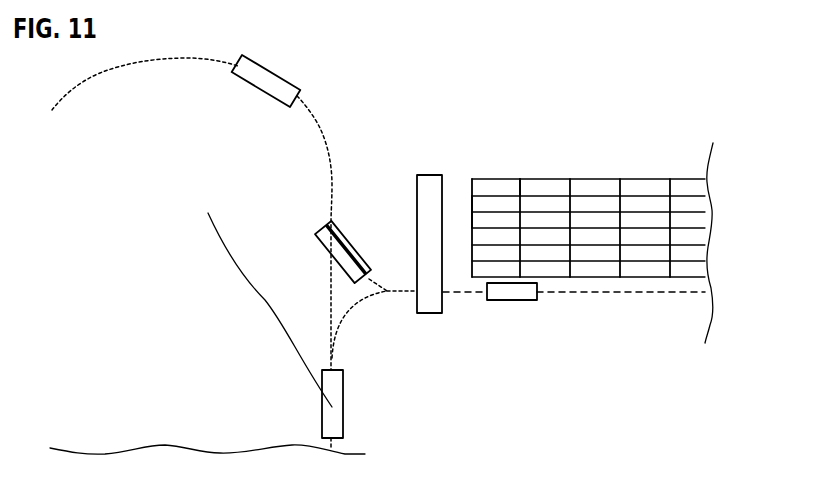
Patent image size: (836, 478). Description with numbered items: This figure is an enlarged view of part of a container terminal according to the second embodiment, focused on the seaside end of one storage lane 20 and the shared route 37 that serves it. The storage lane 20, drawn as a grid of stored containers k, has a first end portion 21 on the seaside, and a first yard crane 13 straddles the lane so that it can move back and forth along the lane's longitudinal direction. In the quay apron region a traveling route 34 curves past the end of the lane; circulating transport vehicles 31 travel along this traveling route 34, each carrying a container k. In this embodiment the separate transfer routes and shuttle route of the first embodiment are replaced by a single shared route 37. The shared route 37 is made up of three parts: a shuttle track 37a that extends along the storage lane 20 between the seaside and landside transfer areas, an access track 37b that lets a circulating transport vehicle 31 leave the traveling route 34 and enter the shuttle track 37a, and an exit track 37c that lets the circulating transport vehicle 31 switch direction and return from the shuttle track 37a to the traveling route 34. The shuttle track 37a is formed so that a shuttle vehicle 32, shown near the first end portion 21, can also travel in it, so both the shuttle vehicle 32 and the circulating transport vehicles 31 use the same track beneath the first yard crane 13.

The first yard crane 13 is at (430, 185).
The storage lane 20 is at (622, 160).
The first end portion 21 is at (441, 228).
The circulating transport vehicle 31 is at (272, 82).
The shuttle vehicle 32 is at (518, 293).
The traveling route 34 is at (315, 115).
The shared route 37 is at (497, 291).
The shuttle track 37a is at (597, 293).
The access track 37b is at (380, 280).
The exit track 37c is at (345, 323).
The container k is at (343, 248).